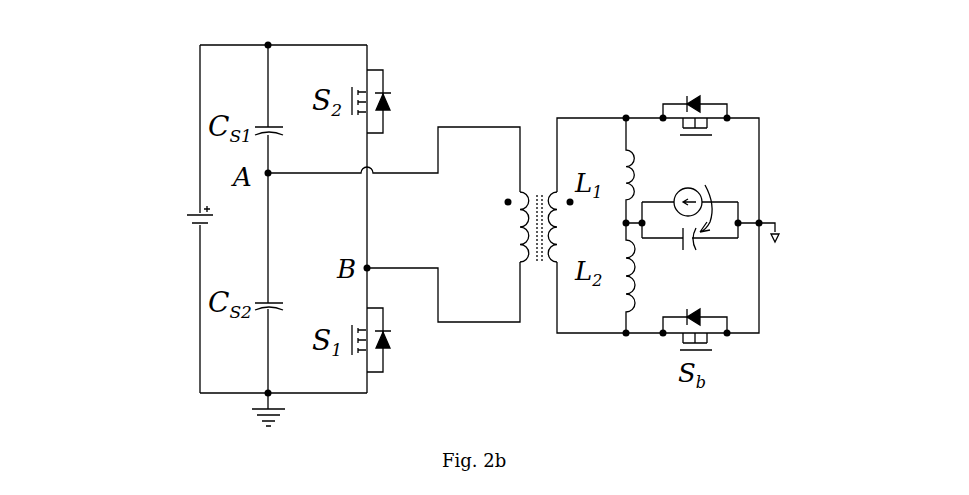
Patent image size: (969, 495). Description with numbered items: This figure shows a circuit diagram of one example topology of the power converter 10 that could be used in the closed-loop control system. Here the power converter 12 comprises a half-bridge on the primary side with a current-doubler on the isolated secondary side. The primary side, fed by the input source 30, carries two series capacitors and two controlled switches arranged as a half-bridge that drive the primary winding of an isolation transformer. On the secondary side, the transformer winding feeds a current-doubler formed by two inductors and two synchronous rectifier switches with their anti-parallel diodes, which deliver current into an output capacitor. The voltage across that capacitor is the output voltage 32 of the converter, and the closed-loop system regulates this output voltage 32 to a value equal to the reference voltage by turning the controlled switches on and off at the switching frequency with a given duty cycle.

The input voltage source 30 is at (150, 185).
The power converter 10 is at (703, 66).
The power converter 12 is at (631, 139).
The output voltage Vo 32 is at (718, 280).